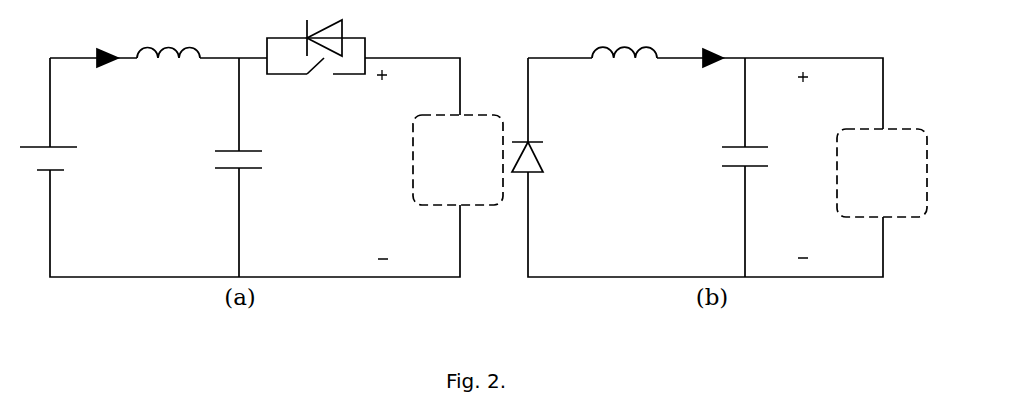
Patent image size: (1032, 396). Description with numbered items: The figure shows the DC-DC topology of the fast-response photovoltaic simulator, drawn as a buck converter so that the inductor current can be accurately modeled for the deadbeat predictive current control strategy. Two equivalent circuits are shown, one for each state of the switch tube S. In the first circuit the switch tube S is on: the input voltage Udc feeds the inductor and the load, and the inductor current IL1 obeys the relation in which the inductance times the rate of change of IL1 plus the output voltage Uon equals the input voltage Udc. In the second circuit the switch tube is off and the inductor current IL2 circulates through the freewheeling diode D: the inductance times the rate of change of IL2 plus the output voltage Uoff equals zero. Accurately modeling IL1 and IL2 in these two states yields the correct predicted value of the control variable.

The input voltage Udc is at (69, 159).
The output voltage Uon is at (384, 164).
The output voltage Uoff is at (804, 165).
The inductor current IL1 is at (90, 48).
The inductor current IL2 is at (694, 48).
The controllable switch with antiparallel diode S is at (316, 47).
The freewheeling diode D is at (527, 157).